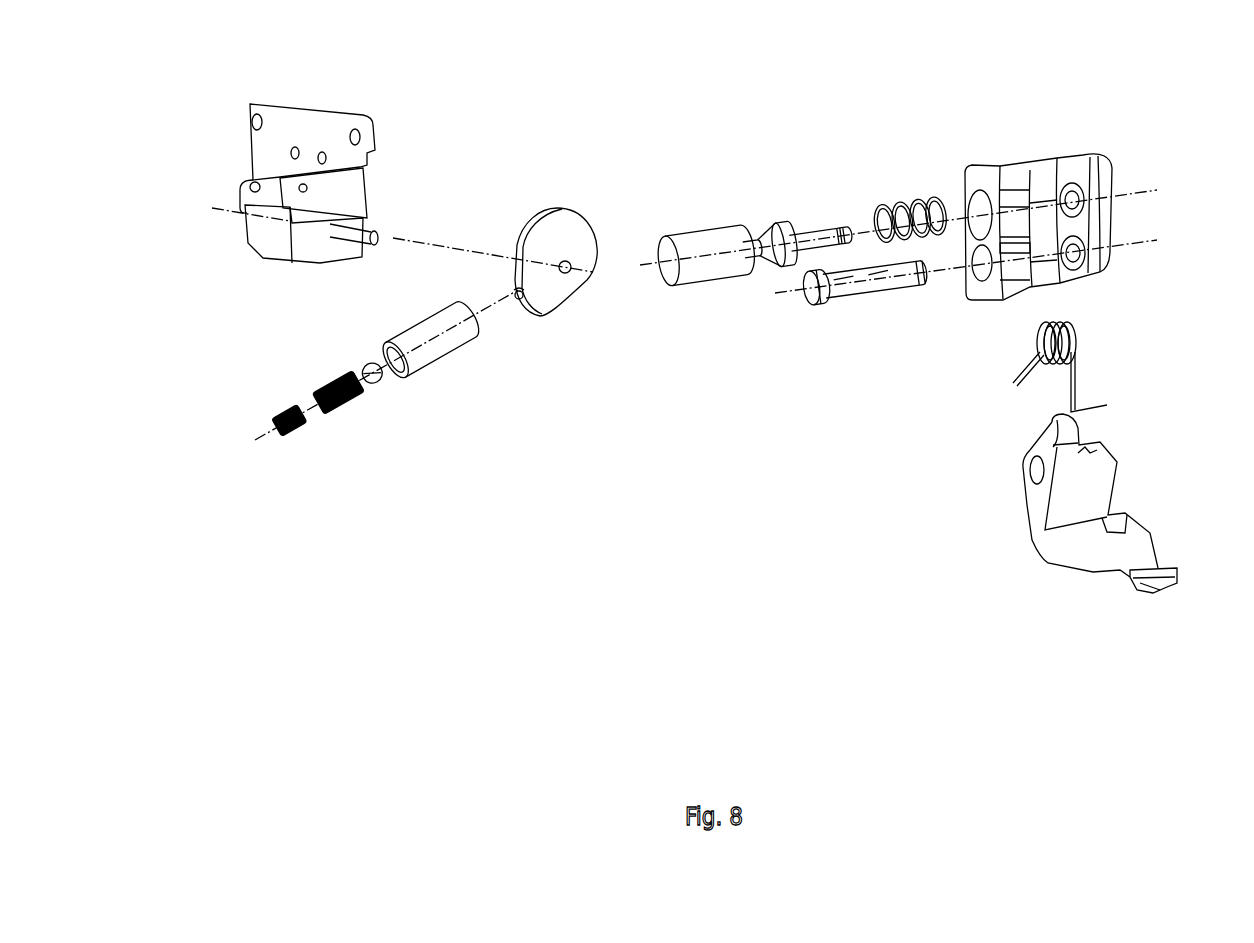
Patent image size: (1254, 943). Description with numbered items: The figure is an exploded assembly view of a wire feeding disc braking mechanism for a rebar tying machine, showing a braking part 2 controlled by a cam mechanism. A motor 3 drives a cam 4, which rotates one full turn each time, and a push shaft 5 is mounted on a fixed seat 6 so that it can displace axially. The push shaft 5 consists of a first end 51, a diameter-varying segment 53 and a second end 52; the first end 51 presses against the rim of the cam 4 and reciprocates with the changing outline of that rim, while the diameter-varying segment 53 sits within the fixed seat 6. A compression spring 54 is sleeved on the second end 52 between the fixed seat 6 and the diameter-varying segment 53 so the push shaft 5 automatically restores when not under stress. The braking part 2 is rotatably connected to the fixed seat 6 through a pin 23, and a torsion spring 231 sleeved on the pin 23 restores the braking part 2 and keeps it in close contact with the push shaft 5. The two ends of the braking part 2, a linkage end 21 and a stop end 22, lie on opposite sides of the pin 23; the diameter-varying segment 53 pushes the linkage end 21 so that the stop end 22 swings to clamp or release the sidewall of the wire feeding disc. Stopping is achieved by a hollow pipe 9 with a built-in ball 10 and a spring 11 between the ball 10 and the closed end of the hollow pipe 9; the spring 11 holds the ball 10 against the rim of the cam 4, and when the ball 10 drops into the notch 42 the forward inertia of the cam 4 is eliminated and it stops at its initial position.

The braking part 2 is at (1095, 490).
The linkage end 21 is at (1037, 450).
The stop end 22 is at (1150, 597).
The pin 23 is at (842, 292).
The torsion spring 231 is at (1080, 336).
The motor 3 is at (263, 228).
The cam 4 is at (565, 288).
The notch 42 is at (520, 302).
The push shaft 5 is at (697, 178).
The first end 51 is at (722, 216).
The second end 52 is at (820, 216).
The diameter-varying segment 53 is at (773, 216).
The compression spring 54 is at (933, 203).
The fixed seat 6 is at (1044, 183).
The hollow pipe 9 is at (418, 372).
The ball 10 is at (373, 384).
The spring 11 is at (330, 412).